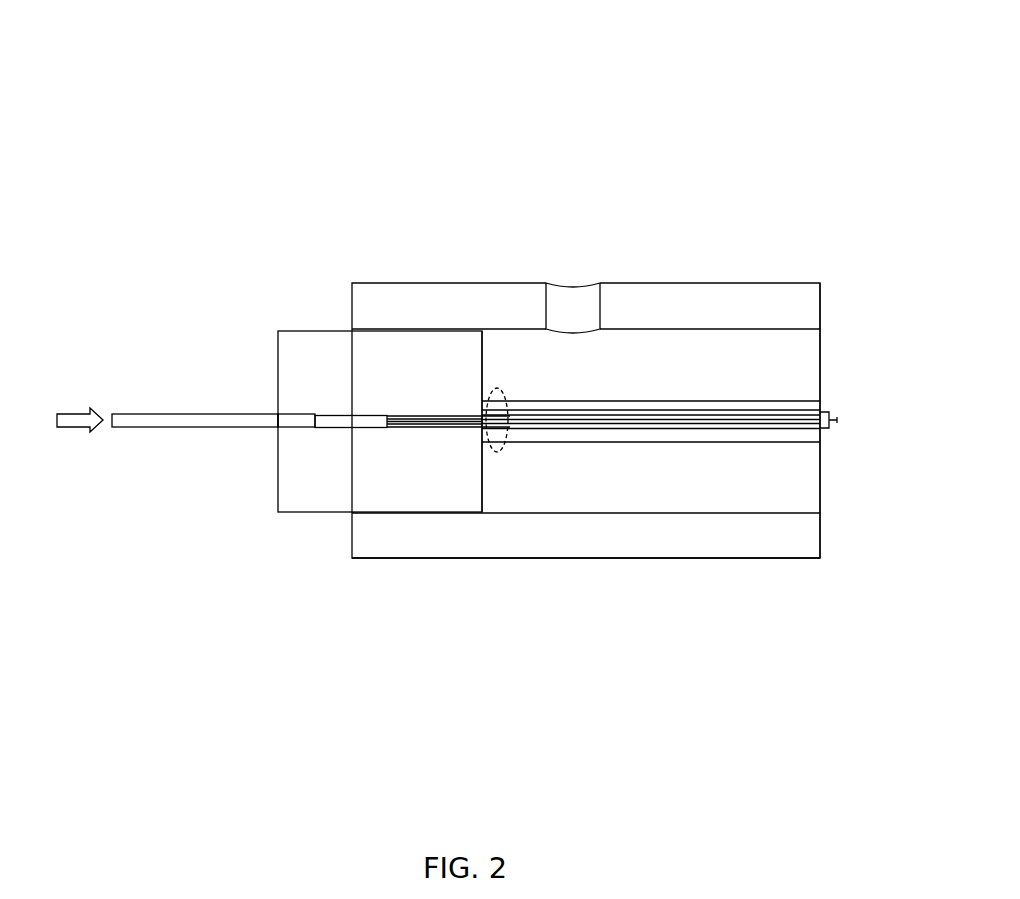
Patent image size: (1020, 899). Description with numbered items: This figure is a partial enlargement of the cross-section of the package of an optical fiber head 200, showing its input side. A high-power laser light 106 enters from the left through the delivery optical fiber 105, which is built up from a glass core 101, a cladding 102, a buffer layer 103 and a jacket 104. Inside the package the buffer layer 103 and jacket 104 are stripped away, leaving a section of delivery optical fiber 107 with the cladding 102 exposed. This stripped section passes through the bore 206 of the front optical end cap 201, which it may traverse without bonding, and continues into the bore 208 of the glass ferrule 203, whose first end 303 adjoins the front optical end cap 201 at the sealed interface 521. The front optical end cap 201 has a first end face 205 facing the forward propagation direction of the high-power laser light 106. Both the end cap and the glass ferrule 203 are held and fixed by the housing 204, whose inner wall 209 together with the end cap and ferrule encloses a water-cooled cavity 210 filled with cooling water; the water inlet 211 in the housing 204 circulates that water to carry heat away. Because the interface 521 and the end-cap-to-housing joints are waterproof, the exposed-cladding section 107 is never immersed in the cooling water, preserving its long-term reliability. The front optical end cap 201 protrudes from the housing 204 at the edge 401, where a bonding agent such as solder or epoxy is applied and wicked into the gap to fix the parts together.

The package of an optical fiber head 200 is at (731, 234).
The front optical end cap 201 is at (427, 509).
The glass ferrule 203 is at (694, 445).
The housing 204 is at (684, 556).
The first end face 205 is at (483, 513).
The bore 206 is at (458, 414).
The bore 208 is at (830, 412).
The inner wall 209 is at (780, 329).
The water-cooled cavity 210 is at (650, 355).
The water inlet 211 is at (570, 286).
The first end 303 is at (499, 452).
The edge 401 is at (350, 327).
The interface 521 is at (484, 395).
The glass core 101 is at (428, 419).
The cladding 102 is at (395, 416).
The buffer layer 103 is at (327, 415).
The jacket 104 is at (293, 414).
The delivery optical fiber 105 is at (146, 413).
The high-power laser light 106 is at (74, 433).
The section of delivery optical fiber with the cladding exposed 107 is at (577, 423).